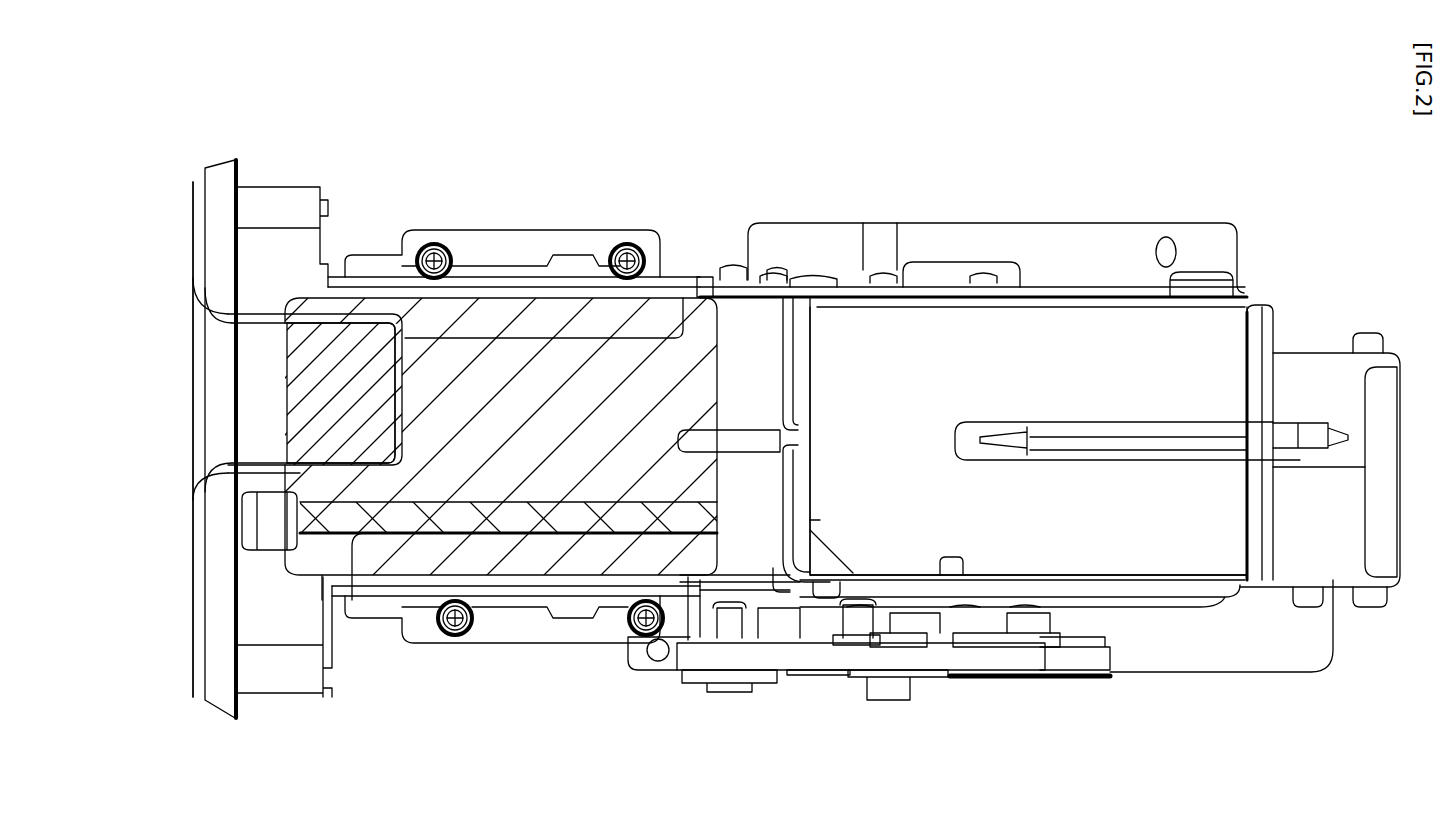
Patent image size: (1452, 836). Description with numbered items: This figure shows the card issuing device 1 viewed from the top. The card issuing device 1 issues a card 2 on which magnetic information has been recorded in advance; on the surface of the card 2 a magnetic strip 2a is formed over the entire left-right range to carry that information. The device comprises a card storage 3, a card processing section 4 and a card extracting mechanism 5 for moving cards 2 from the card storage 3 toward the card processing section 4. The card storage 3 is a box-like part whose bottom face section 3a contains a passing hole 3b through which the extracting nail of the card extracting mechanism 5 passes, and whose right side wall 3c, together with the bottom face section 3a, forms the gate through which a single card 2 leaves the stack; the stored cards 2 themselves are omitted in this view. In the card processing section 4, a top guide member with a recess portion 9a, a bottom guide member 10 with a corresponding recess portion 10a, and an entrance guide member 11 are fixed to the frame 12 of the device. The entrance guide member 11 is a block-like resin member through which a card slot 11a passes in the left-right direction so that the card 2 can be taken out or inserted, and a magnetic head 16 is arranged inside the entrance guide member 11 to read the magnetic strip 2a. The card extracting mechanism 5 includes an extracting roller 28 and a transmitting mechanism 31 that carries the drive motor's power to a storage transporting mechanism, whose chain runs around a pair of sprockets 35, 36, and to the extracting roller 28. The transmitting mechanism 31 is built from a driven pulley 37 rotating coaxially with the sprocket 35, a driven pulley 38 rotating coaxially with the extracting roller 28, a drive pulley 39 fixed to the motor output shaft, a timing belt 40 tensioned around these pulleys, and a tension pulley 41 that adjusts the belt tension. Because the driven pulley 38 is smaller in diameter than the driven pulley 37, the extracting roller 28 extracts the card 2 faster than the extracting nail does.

The card issuing device 1 is at (1073, 176).
The card 2 is at (720, 352).
The magnetic strip 2a is at (707, 500).
The card storage 3 is at (1272, 316).
The bottom face section 3a is at (895, 386).
The passing hole 3b is at (992, 462).
The right side wall 3c is at (812, 460).
The card processing section 4 is at (697, 277).
The card extracting mechanism 5 is at (878, 748).
The recess portion 9a is at (358, 348).
The bottom guide member 10 is at (771, 331).
The recess portion 10a is at (346, 328).
The entrance guide member 11 is at (286, 185).
The card slot 11a is at (215, 362).
The frame 12 is at (516, 272).
The magnetic head 16 is at (250, 552).
The extracting roller 28 is at (760, 430).
The transmitting mechanism 31 is at (795, 690).
The sprocket 35 is at (998, 432).
The sprocket 36 is at (1340, 433).
The driven pulley 37 is at (1038, 680).
The driven pulley 38 is at (692, 684).
The drive pulley 39 is at (832, 676).
The timing belt 40 is at (1111, 657).
The tension pulley 41 is at (925, 680).